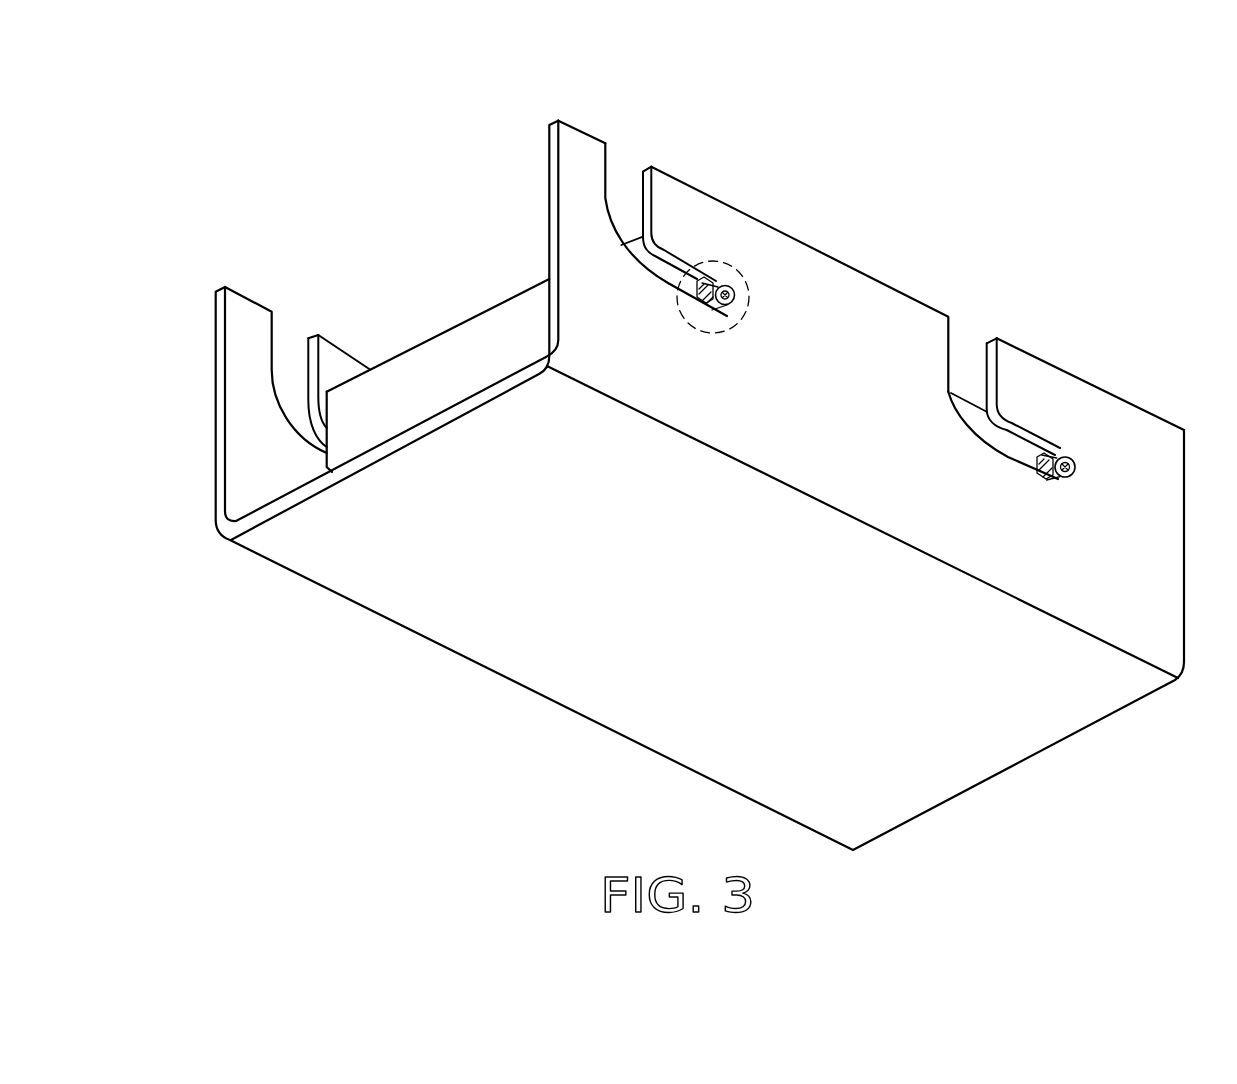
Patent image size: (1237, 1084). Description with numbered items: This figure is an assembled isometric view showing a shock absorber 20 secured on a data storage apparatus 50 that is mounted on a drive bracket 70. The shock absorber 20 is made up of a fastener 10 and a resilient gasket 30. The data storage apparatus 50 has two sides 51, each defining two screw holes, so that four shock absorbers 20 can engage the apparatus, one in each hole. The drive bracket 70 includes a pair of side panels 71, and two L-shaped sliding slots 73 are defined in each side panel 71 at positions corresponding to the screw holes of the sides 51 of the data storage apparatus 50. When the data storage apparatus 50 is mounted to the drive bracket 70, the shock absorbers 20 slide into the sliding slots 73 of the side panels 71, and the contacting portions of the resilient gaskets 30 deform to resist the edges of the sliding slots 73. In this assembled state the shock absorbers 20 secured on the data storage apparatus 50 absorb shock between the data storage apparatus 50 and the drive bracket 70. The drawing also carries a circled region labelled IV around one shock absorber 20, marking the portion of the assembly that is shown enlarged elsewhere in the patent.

The drive bracket 70 is at (1027, 343).
The side panel 71 is at (846, 310).
The sliding slot 73 is at (622, 195).
The side 51 is at (666, 278).
The data storage apparatus 50 is at (464, 350).
The shock absorber 20 is at (760, 204).
The fastener 10 is at (715, 283).
The resilient gasket 30 is at (697, 282).
The detail circle IV is at (741, 268).